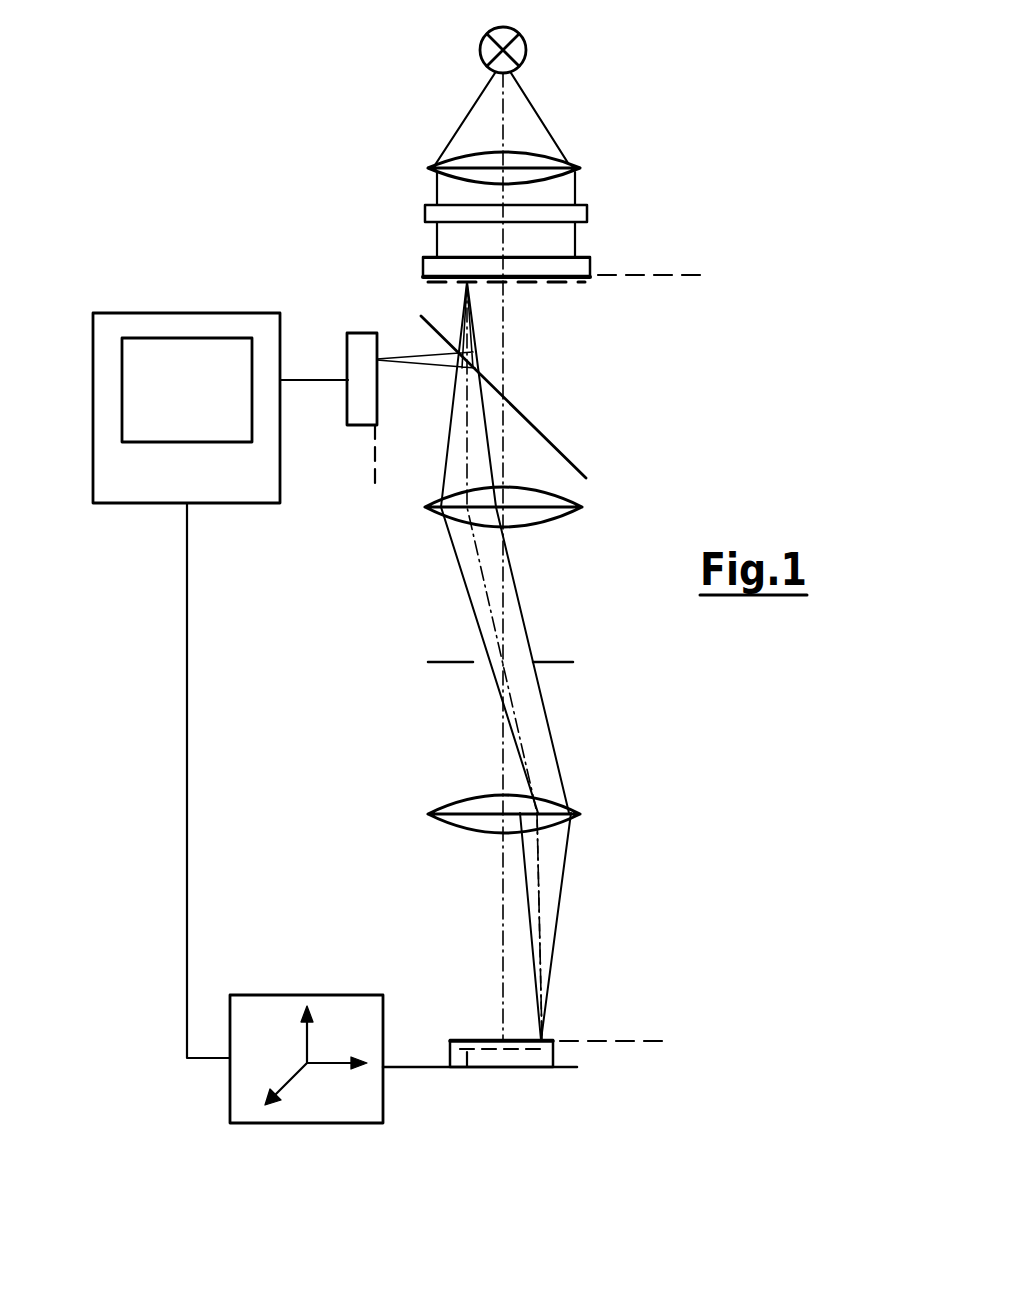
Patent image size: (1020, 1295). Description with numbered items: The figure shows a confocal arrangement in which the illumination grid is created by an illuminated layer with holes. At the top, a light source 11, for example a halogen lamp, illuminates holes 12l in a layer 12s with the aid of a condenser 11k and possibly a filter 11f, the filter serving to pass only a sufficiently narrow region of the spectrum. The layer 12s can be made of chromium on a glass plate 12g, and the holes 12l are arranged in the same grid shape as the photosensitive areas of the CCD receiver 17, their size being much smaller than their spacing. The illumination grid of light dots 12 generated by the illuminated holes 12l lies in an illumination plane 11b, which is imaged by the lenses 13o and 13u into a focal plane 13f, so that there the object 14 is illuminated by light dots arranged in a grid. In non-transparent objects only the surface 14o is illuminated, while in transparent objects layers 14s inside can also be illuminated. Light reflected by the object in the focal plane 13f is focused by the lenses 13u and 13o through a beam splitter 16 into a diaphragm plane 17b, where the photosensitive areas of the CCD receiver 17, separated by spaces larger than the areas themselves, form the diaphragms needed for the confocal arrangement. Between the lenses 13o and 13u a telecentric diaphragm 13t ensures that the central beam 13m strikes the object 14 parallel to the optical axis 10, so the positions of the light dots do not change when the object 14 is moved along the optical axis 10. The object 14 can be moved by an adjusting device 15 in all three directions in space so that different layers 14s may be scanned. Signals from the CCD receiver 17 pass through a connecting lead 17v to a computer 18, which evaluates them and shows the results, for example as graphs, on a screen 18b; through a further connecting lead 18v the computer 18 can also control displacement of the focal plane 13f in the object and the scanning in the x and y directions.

The optical axis 10 is at (502, 932).
The light source 11 is at (522, 50).
The condenser 11k is at (542, 163).
The filter 11f is at (587, 212).
The illumination plane 11b is at (712, 274).
The light dots 12 is at (528, 315).
The glass plate 12g is at (443, 265).
The layer 12s is at (455, 281).
The holes 12l is at (543, 280).
The beam splitter 16 is at (515, 397).
The lens 13o is at (530, 512).
The telecentric diaphragm 13t is at (563, 663).
The lens 13u is at (575, 808).
The central beam 13m is at (545, 863).
The focal plane 13f is at (618, 1040).
The object 14 is at (528, 1060).
The surface 14o is at (472, 1040).
The layers 14s is at (468, 1067).
The adjusting device 15 is at (250, 1123).
The CCD receiver 17 is at (363, 410).
The connecting lead 17v is at (317, 380).
The diaphragm plane 17b is at (375, 492).
The computer 18 is at (167, 330).
The screen 18b is at (163, 412).
The connecting lead 18v is at (187, 775).